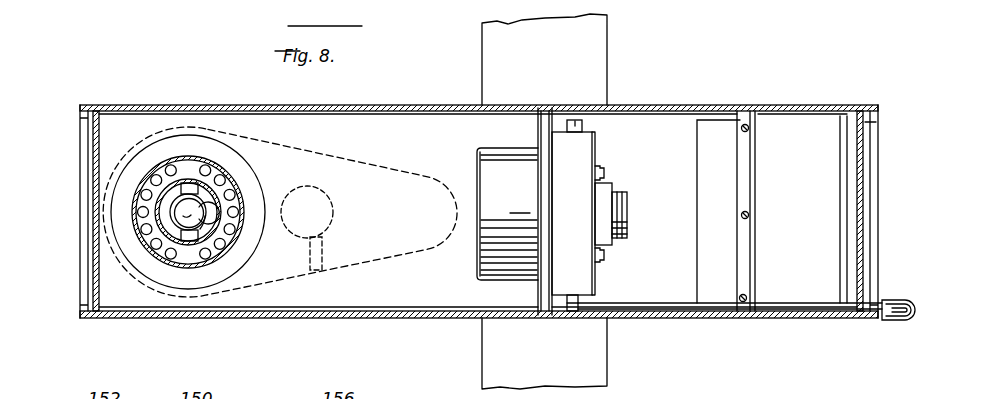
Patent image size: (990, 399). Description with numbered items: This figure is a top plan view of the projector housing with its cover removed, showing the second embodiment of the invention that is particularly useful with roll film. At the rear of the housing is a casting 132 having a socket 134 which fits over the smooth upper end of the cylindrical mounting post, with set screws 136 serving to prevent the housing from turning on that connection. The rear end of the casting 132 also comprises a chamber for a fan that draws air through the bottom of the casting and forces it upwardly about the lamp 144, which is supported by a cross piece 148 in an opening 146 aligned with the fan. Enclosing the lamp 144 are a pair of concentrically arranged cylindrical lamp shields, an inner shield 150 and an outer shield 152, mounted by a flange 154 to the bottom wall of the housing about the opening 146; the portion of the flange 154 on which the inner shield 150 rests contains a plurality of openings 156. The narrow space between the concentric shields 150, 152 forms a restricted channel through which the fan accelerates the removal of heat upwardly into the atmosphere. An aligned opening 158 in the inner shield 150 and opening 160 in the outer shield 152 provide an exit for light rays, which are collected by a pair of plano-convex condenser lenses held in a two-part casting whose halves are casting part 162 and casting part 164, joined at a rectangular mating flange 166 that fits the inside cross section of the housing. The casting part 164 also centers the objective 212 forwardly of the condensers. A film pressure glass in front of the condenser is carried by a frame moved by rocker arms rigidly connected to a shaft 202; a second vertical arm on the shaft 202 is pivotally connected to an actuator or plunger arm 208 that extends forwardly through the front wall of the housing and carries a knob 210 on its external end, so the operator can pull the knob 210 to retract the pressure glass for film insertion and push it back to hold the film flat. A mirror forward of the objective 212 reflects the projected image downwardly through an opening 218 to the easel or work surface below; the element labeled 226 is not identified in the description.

The casting 132 is at (421, 172).
The socket 134 is at (333, 209).
The set screws 136 is at (325, 254).
The lamp 144 is at (203, 200).
The opening 146 is at (166, 216).
The cross piece 148 is at (192, 238).
The inner lamp shield 150 is at (157, 205).
The outer lamp shield 152 is at (153, 169).
The flange 154 is at (213, 152).
The openings 156 is at (181, 156).
The opening in inner shield 158 is at (220, 221).
The opening in outer shield 160 is at (220, 214).
The casting part 162 is at (485, 260).
The casting part 164 is at (590, 196).
The mating flange 166 is at (538, 301).
The shaft 202 is at (582, 123).
The actuator or plunger arm 208 is at (672, 278).
The knob 210 is at (903, 302).
The objective 212 is at (624, 193).
The opening 218 is at (702, 162).
The support bracket 226 is at (605, 55).